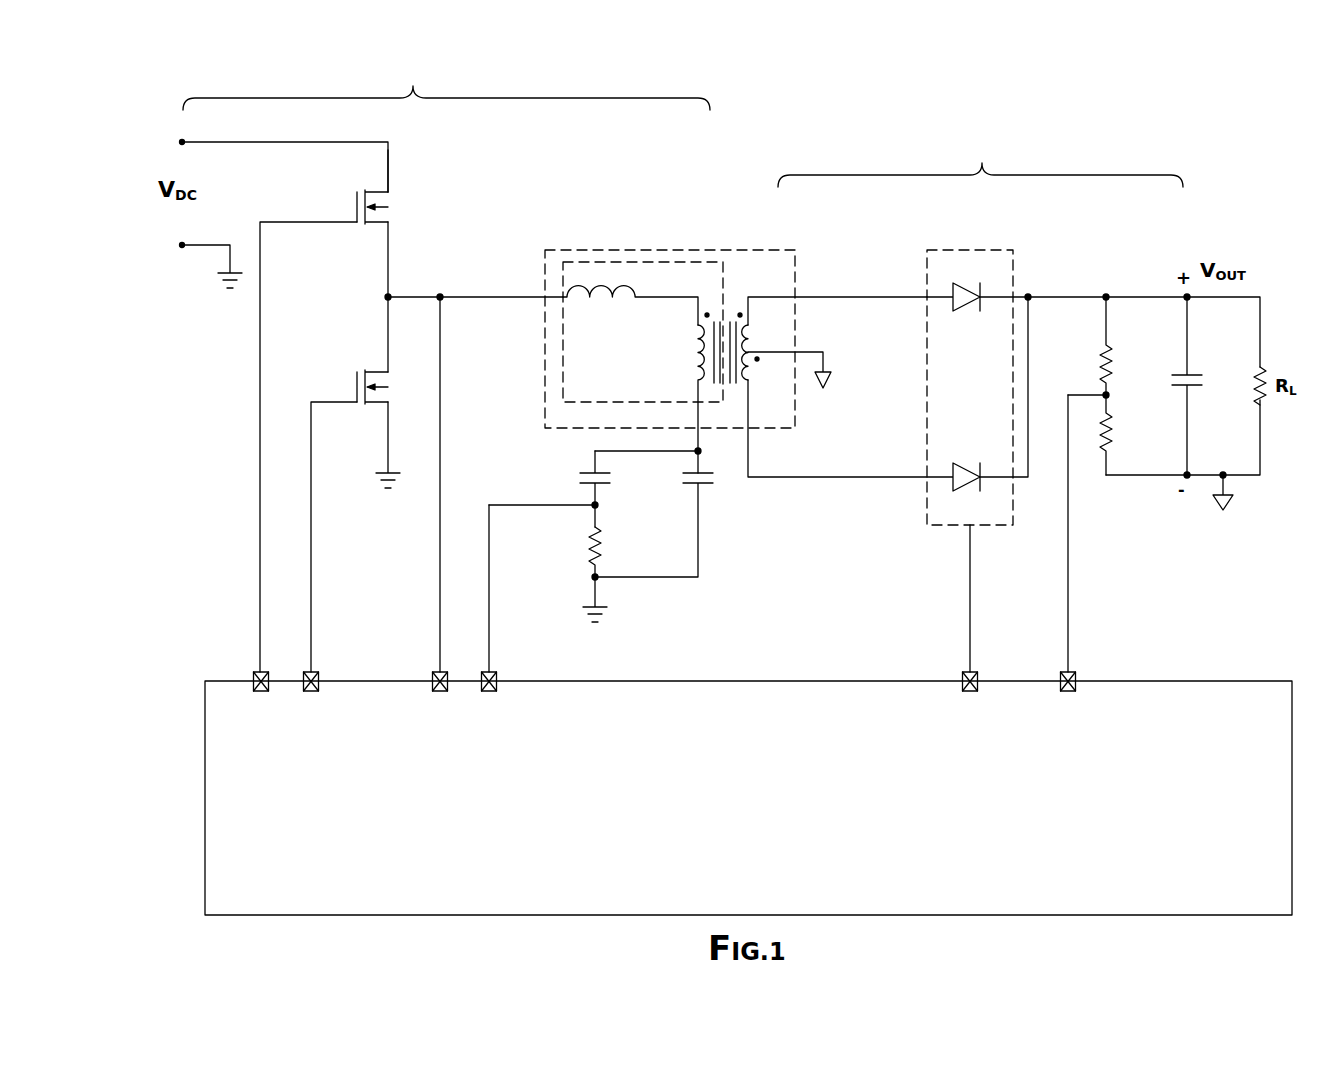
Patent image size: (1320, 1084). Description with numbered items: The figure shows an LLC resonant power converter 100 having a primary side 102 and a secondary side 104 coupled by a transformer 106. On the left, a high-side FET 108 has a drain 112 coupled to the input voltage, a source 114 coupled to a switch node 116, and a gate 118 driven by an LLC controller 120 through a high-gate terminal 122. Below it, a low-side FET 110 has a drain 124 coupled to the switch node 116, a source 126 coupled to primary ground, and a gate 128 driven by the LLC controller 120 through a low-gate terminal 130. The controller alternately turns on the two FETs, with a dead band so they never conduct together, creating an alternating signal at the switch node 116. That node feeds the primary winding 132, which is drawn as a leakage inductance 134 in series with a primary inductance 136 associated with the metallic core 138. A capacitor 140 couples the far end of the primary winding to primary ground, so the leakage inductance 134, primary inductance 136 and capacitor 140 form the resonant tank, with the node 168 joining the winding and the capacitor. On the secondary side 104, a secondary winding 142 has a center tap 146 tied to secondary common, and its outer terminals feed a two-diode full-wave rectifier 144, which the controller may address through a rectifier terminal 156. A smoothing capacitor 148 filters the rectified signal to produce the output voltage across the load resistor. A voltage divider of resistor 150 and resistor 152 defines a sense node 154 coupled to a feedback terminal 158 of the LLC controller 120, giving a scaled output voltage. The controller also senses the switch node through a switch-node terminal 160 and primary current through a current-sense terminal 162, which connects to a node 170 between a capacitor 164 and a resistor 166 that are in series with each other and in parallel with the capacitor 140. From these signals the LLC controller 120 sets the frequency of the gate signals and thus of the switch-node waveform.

The LLC resonant power converter 100 is at (168, 102).
The primary side 102 is at (413, 86).
The secondary side 104 is at (982, 163).
The transformer 106 is at (795, 250).
The high-side field effect transistor 108 is at (393, 198).
The low-side FET 110 is at (378, 355).
The drain 112 is at (390, 163).
The source 114 is at (390, 230).
The switch node 116 is at (391, 294).
The gate 118 is at (332, 220).
The LLC controller 120 is at (740, 829).
The high-gate terminal 122 is at (255, 673).
The drain 124 is at (390, 328).
The source 126 is at (390, 422).
The gate 128 is at (342, 402).
The low-gate terminal 130 is at (318, 679).
The primary winding 132 is at (627, 262).
The leakage inductance 134 is at (595, 300).
The primary inductance 136 is at (702, 355).
The metallic core 138 is at (731, 307).
The capacitor 140 is at (712, 490).
The secondary winding 142 is at (757, 337).
The full-wave rectifier 144 is at (1013, 258).
The center tap 146 is at (825, 358).
The smoothing capacitor 148 is at (1190, 377).
The resistor 150 is at (1100, 358).
The resistor 152 is at (1108, 441).
The sense node 154 is at (1108, 397).
The rectifier terminal 156 is at (962, 675).
The feedback terminal 158 is at (1076, 675).
The switch-node terminal 160 is at (434, 672).
The current-sense terminal 162 is at (497, 676).
The capacitor 164 is at (600, 487).
The resistor 166 is at (590, 558).
The resonant capacitor node 168 is at (702, 451).
The node 170 is at (592, 503).